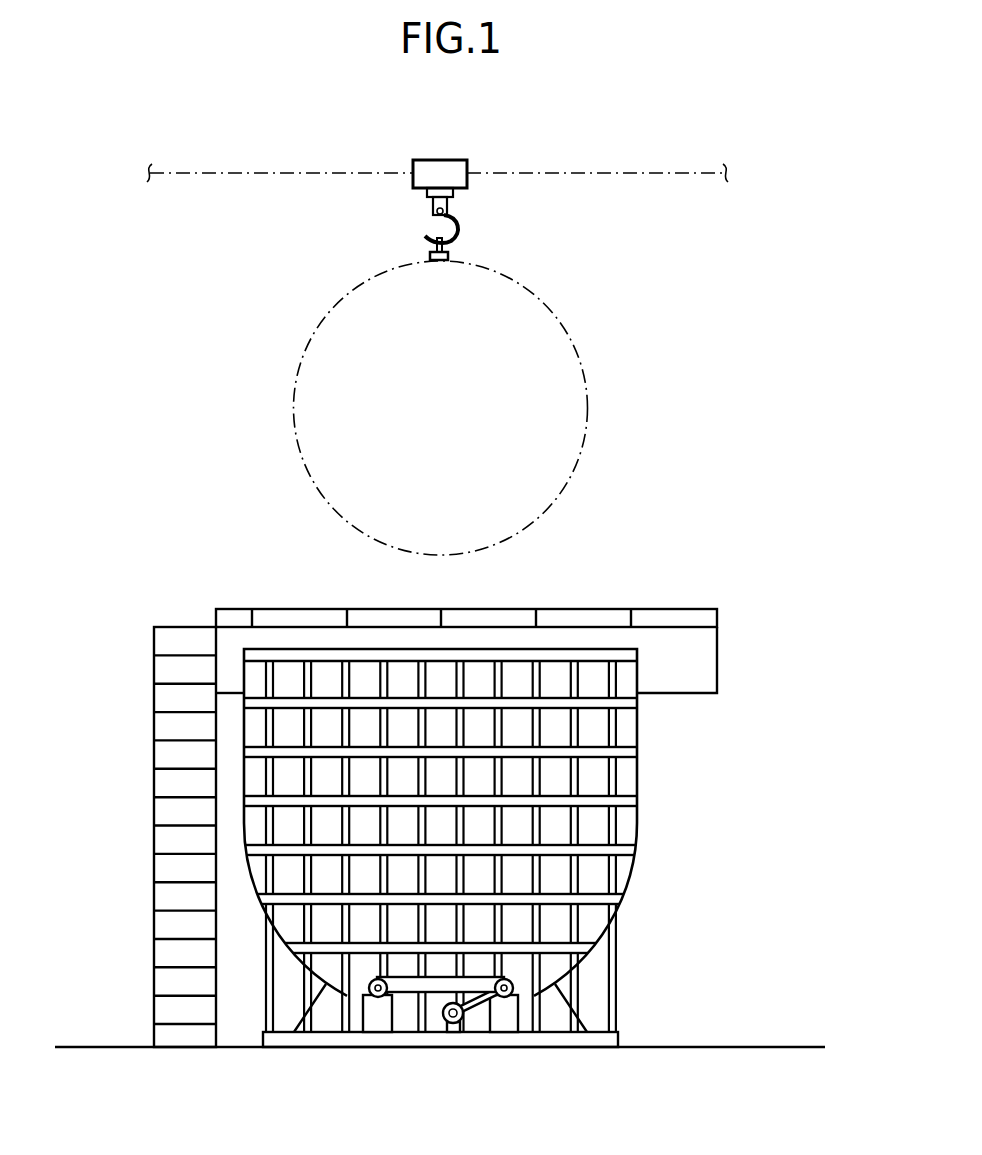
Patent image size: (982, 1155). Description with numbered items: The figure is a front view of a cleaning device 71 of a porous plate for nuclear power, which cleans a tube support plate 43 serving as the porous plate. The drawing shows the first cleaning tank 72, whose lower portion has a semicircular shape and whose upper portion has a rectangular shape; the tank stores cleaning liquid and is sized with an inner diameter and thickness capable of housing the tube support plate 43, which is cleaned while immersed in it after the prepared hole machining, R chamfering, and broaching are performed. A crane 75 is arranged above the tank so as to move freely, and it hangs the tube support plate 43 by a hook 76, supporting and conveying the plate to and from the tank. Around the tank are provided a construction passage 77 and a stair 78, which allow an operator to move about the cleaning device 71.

The tube support plate 43 is at (589, 407).
The cleaning device 71 is at (431, 803).
The first cleaning tank 72 is at (650, 768).
The crane 75 is at (437, 169).
The hook 76 is at (458, 229).
The construction passage 77 is at (709, 656).
The stair 78 is at (162, 836).